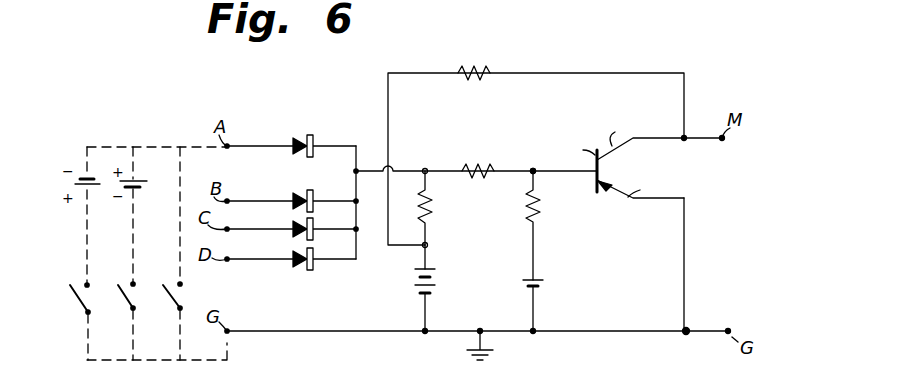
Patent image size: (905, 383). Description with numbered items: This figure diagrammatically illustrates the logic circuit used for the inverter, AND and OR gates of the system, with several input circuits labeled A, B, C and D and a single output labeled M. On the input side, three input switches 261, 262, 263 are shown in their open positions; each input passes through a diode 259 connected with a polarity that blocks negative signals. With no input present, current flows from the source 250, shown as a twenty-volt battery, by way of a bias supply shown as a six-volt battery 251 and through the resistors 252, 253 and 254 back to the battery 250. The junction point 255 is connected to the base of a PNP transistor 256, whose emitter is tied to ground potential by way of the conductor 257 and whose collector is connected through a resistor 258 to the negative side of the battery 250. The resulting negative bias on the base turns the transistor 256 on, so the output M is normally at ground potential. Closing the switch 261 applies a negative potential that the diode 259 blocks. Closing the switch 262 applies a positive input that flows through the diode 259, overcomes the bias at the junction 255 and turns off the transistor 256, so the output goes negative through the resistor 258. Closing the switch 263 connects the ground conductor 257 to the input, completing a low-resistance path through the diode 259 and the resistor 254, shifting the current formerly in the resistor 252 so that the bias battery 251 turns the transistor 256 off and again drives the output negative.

The source 250 is at (412, 285).
The bias supply battery 251 is at (555, 291).
The resistor 252 is at (528, 206).
The resistor 253 is at (476, 166).
The resistor 254 is at (427, 203).
The junction point 255 is at (534, 168).
The transistor 256 is at (603, 172).
The conductor 257 is at (583, 331).
The resistor 258 is at (472, 70).
The diode 259 is at (307, 132).
The input switch 261 is at (84, 282).
The input switch 262 is at (130, 281).
The input switch 263 is at (177, 282).